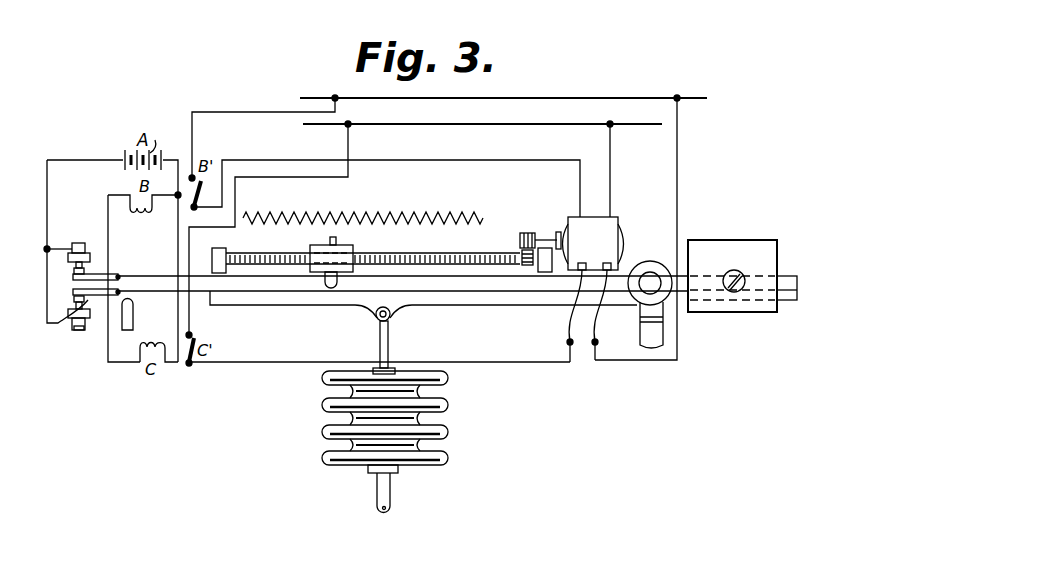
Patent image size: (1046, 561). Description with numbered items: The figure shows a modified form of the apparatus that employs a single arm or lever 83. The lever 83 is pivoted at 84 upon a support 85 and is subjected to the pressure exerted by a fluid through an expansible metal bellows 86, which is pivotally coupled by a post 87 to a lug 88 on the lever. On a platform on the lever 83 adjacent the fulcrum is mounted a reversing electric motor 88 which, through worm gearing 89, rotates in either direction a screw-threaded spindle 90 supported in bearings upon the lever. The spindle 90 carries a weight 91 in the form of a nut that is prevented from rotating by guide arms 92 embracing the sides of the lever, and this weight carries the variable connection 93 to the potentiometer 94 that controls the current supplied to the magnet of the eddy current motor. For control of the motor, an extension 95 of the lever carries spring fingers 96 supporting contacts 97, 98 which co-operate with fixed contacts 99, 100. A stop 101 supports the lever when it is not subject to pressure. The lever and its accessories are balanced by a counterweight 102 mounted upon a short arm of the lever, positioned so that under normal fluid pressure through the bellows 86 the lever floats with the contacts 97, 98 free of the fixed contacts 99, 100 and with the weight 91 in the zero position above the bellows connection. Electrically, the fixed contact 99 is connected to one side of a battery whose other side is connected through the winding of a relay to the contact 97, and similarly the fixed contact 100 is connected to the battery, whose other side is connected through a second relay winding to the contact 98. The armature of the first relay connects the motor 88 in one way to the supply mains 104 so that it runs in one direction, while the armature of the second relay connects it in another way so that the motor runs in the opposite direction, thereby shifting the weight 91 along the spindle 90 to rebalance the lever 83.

The lever 83 is at (493, 292).
The pivot 84 is at (650, 274).
The support 85 is at (663, 340).
The expansible metal bellows 86 is at (450, 435).
The post 87 is at (389, 344).
The reversing electric motor 88 is at (612, 218).
The worm gearing 89 is at (531, 232).
The screw-threaded spindle 90 is at (448, 254).
The weight 91 is at (350, 251).
The guide arms 92 is at (329, 285).
The variable connection 93 is at (328, 240).
The potentiometer 94 is at (445, 213).
The extension 95 is at (148, 284).
The spring fingers 96 is at (73, 288).
The contact 97 is at (120, 250).
The contact 98 is at (66, 328).
The fixed contact 99 is at (90, 235).
The fixed contact 100 is at (80, 332).
The stop 101 is at (133, 315).
The counterweight 102 is at (735, 247).
The supply mains 104 is at (555, 123).